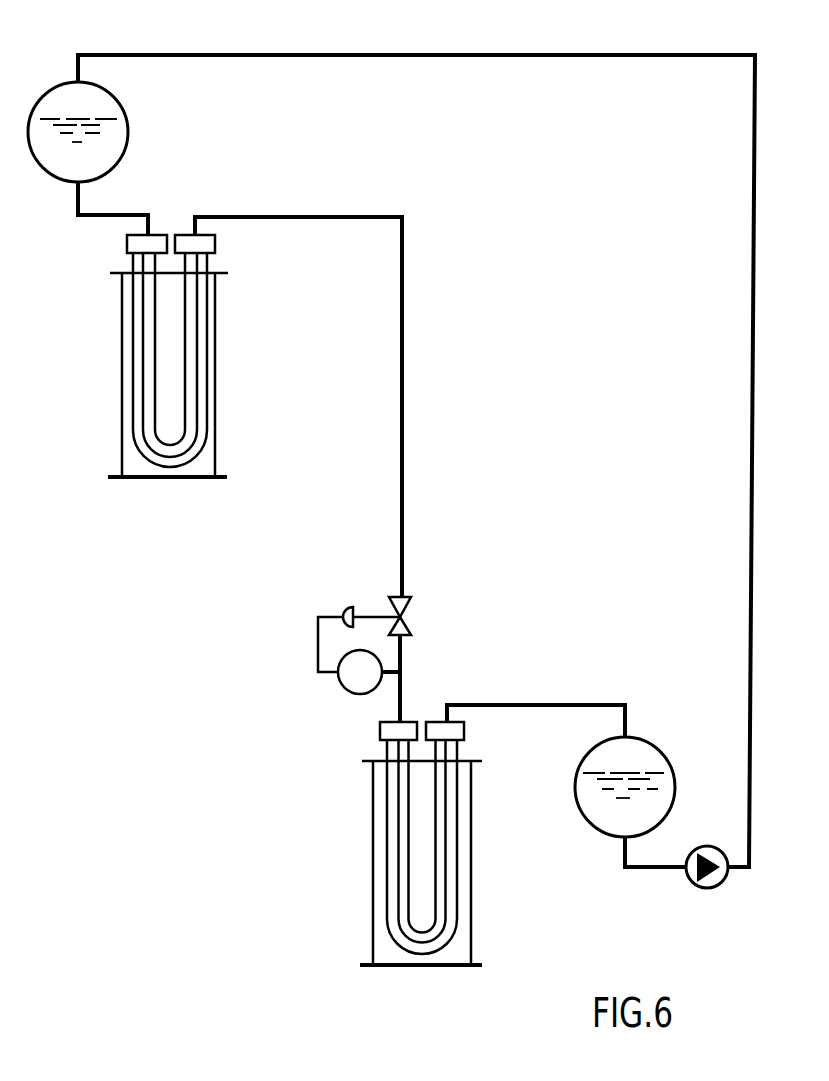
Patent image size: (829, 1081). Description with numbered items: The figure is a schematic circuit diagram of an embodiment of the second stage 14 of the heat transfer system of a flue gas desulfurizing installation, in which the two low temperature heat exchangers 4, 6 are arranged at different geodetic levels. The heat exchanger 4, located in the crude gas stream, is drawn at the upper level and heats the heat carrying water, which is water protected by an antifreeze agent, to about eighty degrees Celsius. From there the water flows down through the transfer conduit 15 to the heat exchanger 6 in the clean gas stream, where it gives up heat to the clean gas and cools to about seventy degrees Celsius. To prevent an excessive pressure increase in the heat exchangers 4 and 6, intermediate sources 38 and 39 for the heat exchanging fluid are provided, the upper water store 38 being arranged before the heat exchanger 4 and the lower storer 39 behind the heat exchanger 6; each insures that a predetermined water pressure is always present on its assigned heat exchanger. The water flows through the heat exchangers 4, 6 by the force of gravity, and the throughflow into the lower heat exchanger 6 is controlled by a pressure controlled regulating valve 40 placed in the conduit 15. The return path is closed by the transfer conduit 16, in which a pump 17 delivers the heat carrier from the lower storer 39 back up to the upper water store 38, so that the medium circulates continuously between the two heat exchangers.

The heat exchanger 4 is at (215, 393).
The heat exchanger 6 is at (372, 853).
The second stage 14 is at (213, 580).
The transfer conduit 15 is at (403, 386).
The transfer conduit 16 is at (513, 52).
The pump 17 is at (708, 889).
The intermediate source 38 is at (128, 129).
The intermediate source 39 is at (576, 780).
The pressure controlled regulating valve 40 is at (342, 688).